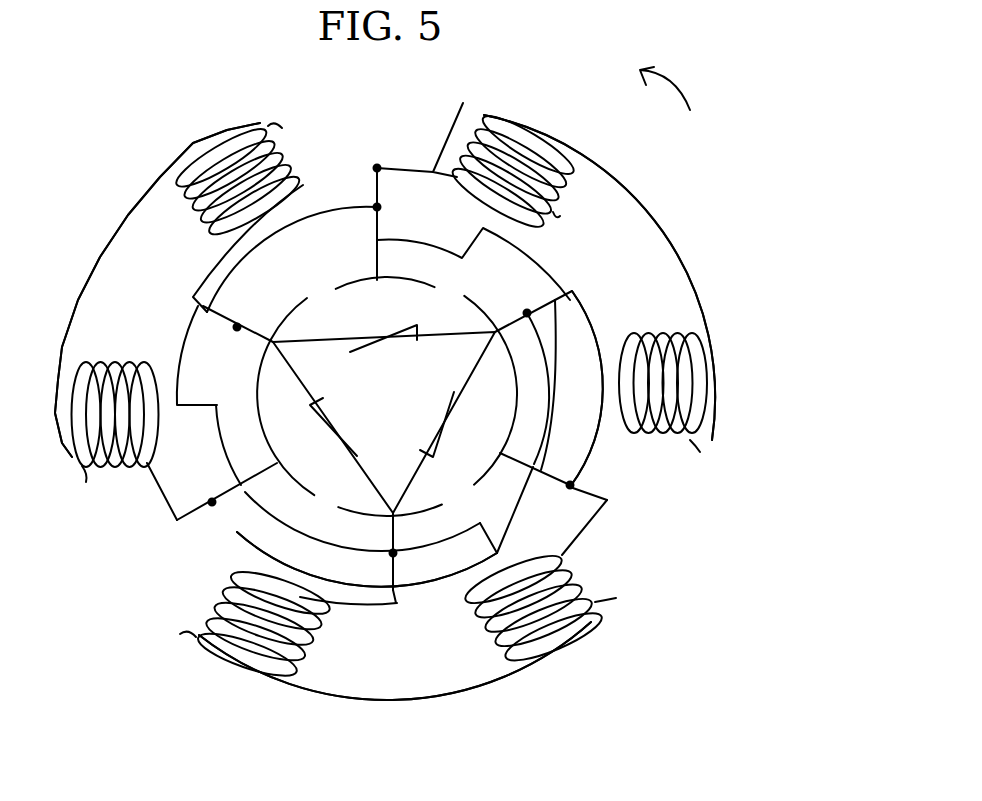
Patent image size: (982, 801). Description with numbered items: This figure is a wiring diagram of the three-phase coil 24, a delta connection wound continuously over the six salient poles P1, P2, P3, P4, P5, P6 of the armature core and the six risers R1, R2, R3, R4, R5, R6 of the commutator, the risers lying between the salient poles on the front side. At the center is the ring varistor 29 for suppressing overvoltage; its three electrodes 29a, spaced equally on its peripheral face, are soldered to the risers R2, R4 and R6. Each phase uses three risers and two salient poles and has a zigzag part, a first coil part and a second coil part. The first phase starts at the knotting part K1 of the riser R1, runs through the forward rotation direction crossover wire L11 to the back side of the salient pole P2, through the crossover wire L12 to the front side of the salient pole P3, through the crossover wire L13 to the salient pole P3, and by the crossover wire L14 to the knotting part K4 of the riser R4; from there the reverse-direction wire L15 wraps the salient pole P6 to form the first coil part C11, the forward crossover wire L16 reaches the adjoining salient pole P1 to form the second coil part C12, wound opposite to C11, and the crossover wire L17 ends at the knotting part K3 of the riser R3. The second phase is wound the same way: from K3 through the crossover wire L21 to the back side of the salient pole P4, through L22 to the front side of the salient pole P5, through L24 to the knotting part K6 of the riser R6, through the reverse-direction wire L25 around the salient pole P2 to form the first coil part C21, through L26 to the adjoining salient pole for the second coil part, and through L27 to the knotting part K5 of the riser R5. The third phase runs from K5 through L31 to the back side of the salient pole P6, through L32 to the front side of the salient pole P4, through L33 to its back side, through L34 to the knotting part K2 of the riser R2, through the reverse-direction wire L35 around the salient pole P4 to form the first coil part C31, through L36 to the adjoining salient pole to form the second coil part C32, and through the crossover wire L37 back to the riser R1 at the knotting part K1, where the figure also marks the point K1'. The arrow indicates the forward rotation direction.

The three-phase coil 24 is at (120, 52).
The ring varistor 29 is at (404, 419).
The electrodes 29a is at (292, 326).
The forward rotation direction crossover wire L11 is at (324, 212).
The forward rotation direction crossover wire L12 is at (182, 344).
The forward rotation direction crossover wire L13 is at (222, 447).
The stator core arc segment L14 is at (300, 525).
The reverse rotation direction crossover wire L15 is at (352, 604).
The forward rotation crossover wire L16 is at (385, 700).
The forward rotation direction crossover wire L17 is at (583, 538).
The forward rotation direction crossover wire L21 is at (597, 445).
The forward rotation direction crossover wire L22 is at (545, 348).
The forward rotation direction crossover wire L24 is at (278, 288).
The reverse rotation direction crossover wire L25 is at (212, 264).
The forward rotation direction crossover wire L26 is at (84, 278).
The forward rotation direction crossover wire L27 is at (158, 488).
The forward rotation direction crossover wire L31 is at (247, 530).
The forward rotation direction crossover wire L32 is at (542, 264).
The forward rotation direction crossover wire L33 is at (516, 508).
The forward rotation direction crossover wire L34 is at (540, 350).
The reverse rotation direction crossover wire L35 is at (600, 307).
The forward rotation direction crossover wire L36 is at (686, 228).
The forward rotation direction crossover wire L37 is at (436, 126).
The riser R1 is at (378, 219).
The riser R2 is at (511, 313).
The riser R3 is at (550, 489).
The riser R4 is at (395, 530).
The riser R5 is at (195, 516).
The riser R6 is at (231, 333).
The junction point K1' is at (409, 146).
The knotting part K1 is at (404, 196).
The knotting part K2 is at (526, 310).
The knotting part K3 is at (574, 485).
The knotting part K4 is at (396, 553).
The knotting part K5 is at (212, 505).
The knotting part K6 is at (240, 325).
The salient pole P1 is at (534, 617).
The salient pole P2 is at (238, 173).
The salient pole P3 is at (86, 414).
The salient pole P4 is at (691, 383).
The salient pole P5 is at (513, 165).
The salient pole P6 is at (264, 637).
The first coil part C11 is at (180, 634).
The second coil part C12 is at (616, 598).
The first coil part C21 is at (282, 128).
The first coil part C31 is at (700, 452).
The second coil part C32 is at (560, 216).